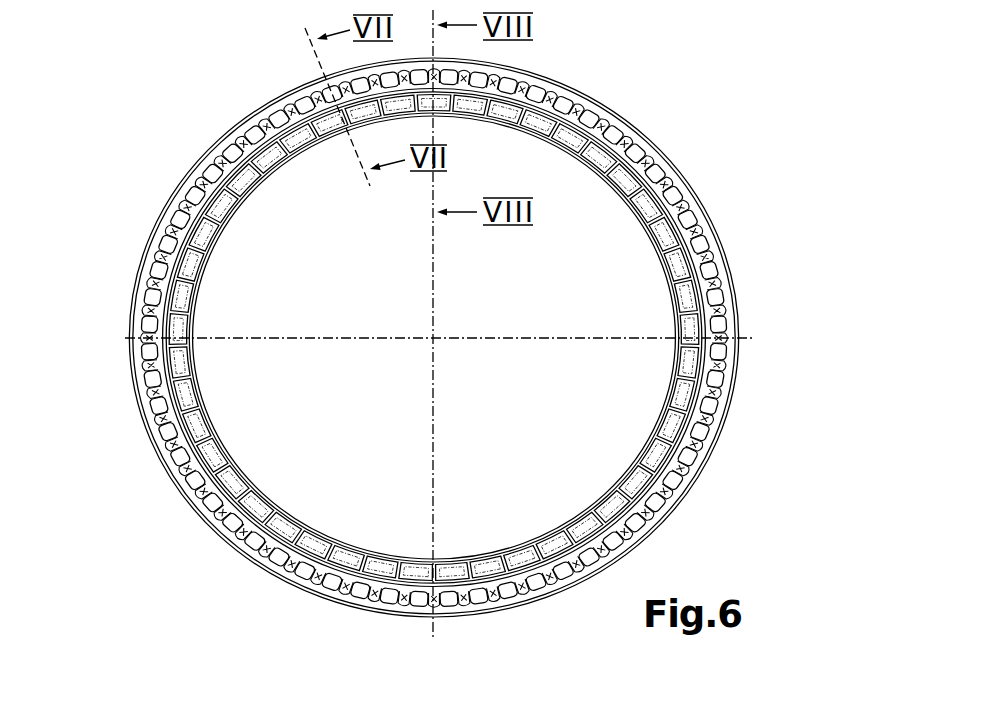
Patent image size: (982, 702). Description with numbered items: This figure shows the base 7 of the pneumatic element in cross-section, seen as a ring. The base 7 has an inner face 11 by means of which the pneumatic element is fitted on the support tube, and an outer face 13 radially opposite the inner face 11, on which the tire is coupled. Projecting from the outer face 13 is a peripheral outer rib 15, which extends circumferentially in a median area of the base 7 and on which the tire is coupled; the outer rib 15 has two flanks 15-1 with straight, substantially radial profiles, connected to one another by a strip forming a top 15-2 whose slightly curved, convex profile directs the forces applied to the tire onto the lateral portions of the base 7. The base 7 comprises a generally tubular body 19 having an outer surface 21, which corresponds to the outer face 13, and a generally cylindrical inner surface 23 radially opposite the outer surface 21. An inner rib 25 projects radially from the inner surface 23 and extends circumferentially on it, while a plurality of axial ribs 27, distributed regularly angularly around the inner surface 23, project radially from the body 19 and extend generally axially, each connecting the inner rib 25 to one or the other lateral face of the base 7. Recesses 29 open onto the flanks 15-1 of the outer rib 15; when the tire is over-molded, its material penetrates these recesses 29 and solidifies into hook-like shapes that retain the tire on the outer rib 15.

The base 7 is at (657, 148).
The inner face 11 is at (613, 203).
The outer face 13 is at (766, 270).
The outer rib 15 is at (142, 324).
The flanks 15-1 is at (627, 553).
The top 15-2 is at (738, 401).
The body 19 is at (248, 538).
The outer surface 21 is at (678, 188).
The inner surface 23 is at (232, 188).
The inner rib 25 is at (223, 468).
The axial ribs 27 is at (680, 330).
The recesses 29 is at (590, 118).